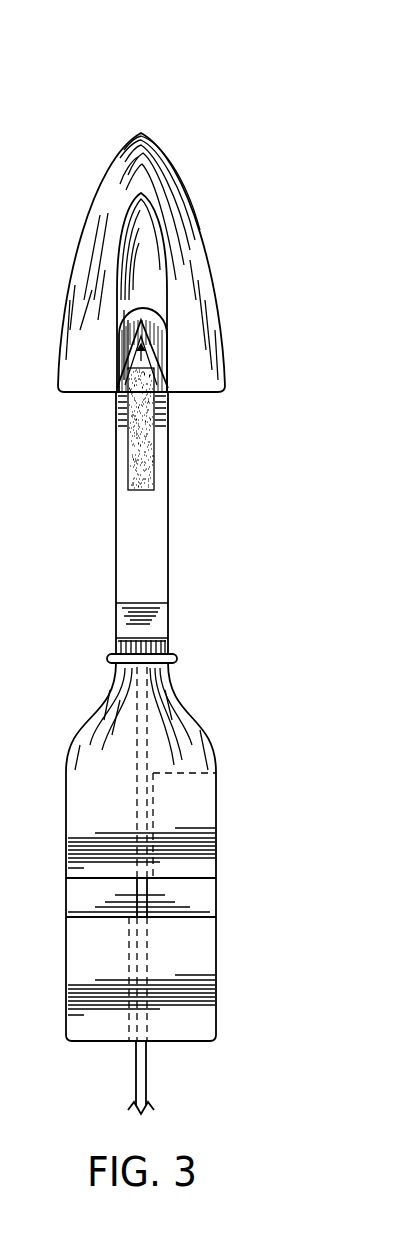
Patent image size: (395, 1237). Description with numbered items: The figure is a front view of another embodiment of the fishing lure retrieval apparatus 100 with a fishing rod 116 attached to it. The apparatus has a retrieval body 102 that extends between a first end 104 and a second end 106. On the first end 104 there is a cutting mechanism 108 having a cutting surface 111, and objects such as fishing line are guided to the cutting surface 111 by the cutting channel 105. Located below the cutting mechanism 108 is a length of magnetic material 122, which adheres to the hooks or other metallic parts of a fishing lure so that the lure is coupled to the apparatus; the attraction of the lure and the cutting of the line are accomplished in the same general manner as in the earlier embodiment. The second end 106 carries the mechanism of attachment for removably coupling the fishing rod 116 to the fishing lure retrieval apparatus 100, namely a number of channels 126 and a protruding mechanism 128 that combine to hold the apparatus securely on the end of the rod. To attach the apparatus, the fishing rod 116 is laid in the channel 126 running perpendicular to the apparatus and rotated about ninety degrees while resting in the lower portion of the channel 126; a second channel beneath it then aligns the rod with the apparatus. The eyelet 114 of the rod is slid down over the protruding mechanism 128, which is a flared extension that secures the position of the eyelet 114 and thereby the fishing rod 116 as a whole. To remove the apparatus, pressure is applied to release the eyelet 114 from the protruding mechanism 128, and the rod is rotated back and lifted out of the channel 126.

The fishing lure retrieval apparatus 100 is at (246, 89).
The retrieval body 102 is at (128, 550).
The first end 104 is at (103, 148).
The cutting channel 105 is at (143, 356).
The second end 106 is at (211, 1068).
The cutting mechanism 108 is at (222, 250).
The cutting surface 111 is at (147, 332).
The eyelet 114 is at (107, 659).
The fishing rod 116 is at (136, 1073).
The length of magnetic material 122 is at (140, 453).
The channel 126 is at (202, 898).
The protruding mechanism 128 is at (145, 642).